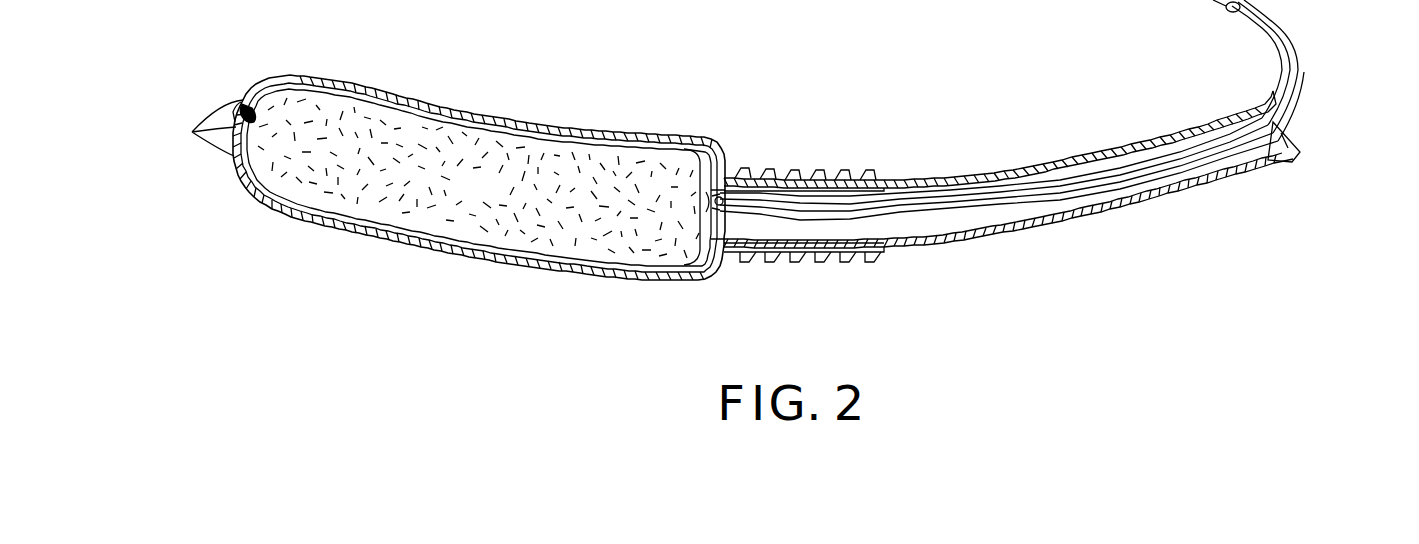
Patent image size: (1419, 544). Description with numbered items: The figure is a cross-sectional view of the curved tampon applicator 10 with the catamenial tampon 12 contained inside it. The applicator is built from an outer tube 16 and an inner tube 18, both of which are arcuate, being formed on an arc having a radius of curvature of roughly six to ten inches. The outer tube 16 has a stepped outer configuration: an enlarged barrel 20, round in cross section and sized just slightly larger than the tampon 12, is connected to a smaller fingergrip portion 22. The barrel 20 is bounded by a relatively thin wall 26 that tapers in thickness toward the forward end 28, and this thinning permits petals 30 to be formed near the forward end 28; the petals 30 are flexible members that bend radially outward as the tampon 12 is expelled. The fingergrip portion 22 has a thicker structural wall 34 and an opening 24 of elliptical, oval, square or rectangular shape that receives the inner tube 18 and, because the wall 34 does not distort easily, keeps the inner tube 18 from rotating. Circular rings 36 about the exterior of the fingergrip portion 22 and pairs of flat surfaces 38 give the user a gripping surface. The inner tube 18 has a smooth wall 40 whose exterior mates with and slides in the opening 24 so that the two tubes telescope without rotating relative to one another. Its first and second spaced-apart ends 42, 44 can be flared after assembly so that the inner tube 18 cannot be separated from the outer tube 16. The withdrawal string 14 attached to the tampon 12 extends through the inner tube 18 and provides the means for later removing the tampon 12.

The curved tampon applicator 10 is at (934, 46).
The catamenial tampon 12 is at (489, 196).
The withdrawal string 14 is at (1270, 30).
The outer tube 16 is at (614, 116).
The inner tube 18 is at (1032, 150).
The enlarged barrel 20 is at (445, 108).
The fingergrip portion 22 is at (822, 160).
The opening 24 is at (892, 182).
The wall 26 is at (323, 79).
The forward end 28 is at (262, 82).
The petals 30 is at (193, 128).
The wall 34 is at (885, 253).
The circular rings 36 is at (830, 262).
The flat surfaces 38 is at (848, 176).
The wall 40 is at (1062, 230).
The first end 42 is at (700, 266).
The second end 44 is at (1300, 154).